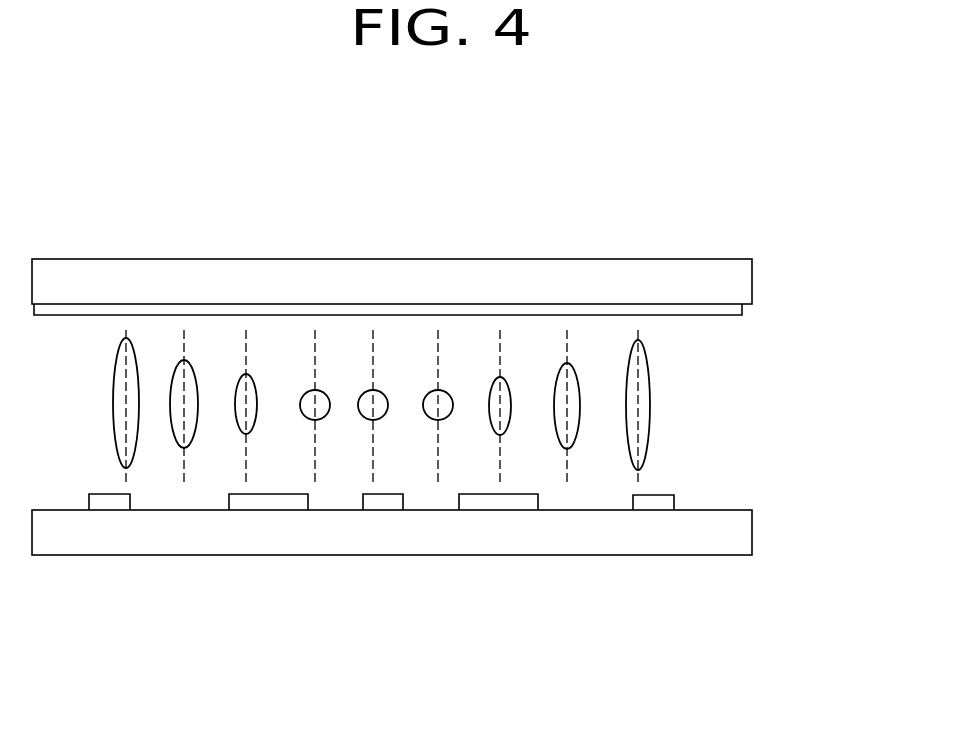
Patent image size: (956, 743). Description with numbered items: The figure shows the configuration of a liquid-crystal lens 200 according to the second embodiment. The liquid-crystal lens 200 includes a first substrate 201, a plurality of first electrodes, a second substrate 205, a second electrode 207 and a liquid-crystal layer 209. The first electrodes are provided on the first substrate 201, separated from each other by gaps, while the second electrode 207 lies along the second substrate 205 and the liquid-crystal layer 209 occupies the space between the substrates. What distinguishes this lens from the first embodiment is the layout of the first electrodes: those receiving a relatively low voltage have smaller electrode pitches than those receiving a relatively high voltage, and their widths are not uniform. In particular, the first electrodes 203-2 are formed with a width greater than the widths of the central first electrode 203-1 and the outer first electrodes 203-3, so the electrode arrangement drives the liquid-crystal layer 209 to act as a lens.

The liquid-crystal lens 200 is at (472, 201).
The first substrate 201 is at (752, 535).
The first electrode 203-1 is at (382, 505).
The first electrodes 203-2 is at (268, 503).
The first electrodes 203-3 is at (108, 503).
The second substrate 205 is at (752, 281).
The second electrode 207 is at (742, 312).
The liquid-crystal layer 209 is at (728, 407).